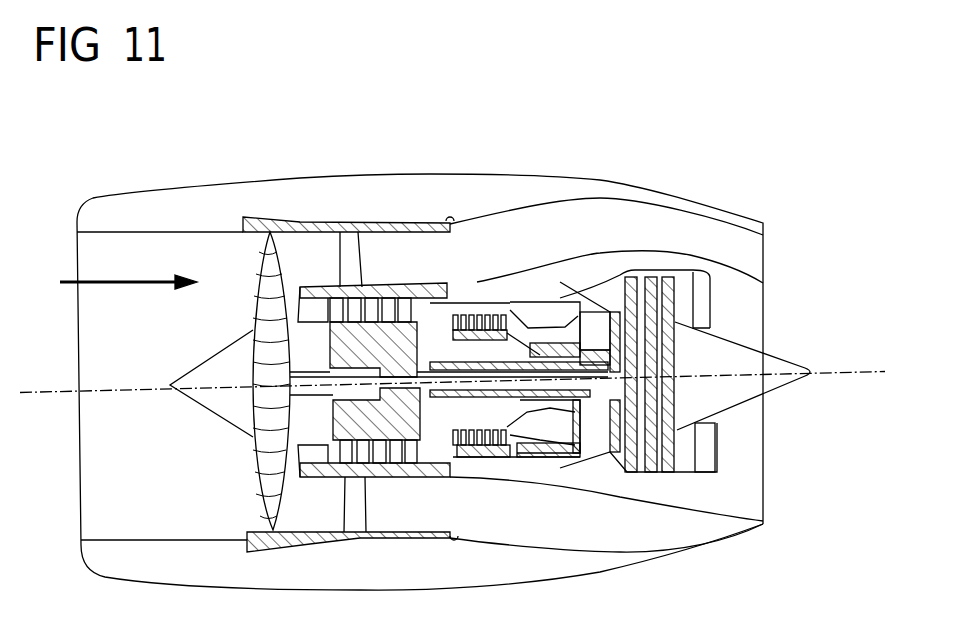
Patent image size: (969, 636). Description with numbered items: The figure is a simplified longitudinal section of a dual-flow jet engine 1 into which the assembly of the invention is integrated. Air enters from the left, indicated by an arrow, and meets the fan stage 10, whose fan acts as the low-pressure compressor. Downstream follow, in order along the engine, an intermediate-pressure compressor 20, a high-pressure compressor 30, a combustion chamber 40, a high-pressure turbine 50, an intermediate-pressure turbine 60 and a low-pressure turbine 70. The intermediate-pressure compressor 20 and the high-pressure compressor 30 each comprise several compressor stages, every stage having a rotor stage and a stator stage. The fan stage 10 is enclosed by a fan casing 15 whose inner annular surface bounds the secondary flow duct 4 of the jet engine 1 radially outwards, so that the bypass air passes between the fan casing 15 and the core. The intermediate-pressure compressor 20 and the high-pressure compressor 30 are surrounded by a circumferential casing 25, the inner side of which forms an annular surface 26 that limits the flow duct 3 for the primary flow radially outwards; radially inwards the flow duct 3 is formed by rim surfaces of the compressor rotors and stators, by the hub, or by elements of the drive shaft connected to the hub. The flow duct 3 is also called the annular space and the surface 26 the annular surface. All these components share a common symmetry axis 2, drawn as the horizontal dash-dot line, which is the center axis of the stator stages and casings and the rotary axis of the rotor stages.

The dual-flow jet engine 1 is at (410, 170).
The symmetry axis 2 is at (840, 372).
The flow duct 3 is at (325, 312).
The secondary flow duct 4 is at (305, 237).
The fan stage 10 is at (248, 285).
The fan casing 15 is at (270, 232).
The intermediate-pressure compressor 20 is at (375, 302).
The circumferential casing 25 is at (415, 287).
The annular surface 26 is at (446, 452).
The high-pressure compressor 30 is at (495, 300).
The combustion chamber 40 is at (544, 307).
The high-pressure turbine 50 is at (595, 292).
The intermediate-pressure turbine 60 is at (623, 284).
The low-pressure turbine 70 is at (677, 278).